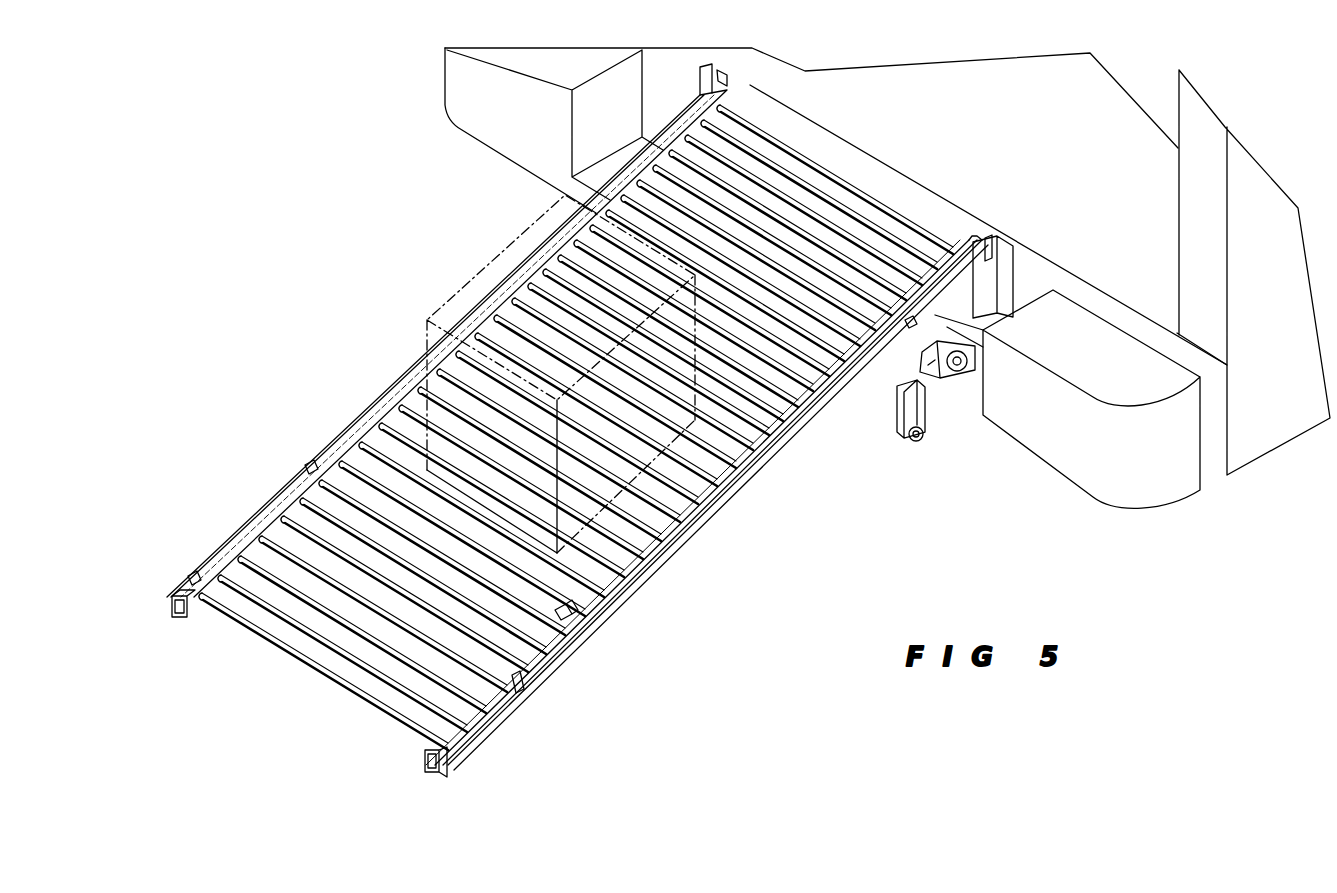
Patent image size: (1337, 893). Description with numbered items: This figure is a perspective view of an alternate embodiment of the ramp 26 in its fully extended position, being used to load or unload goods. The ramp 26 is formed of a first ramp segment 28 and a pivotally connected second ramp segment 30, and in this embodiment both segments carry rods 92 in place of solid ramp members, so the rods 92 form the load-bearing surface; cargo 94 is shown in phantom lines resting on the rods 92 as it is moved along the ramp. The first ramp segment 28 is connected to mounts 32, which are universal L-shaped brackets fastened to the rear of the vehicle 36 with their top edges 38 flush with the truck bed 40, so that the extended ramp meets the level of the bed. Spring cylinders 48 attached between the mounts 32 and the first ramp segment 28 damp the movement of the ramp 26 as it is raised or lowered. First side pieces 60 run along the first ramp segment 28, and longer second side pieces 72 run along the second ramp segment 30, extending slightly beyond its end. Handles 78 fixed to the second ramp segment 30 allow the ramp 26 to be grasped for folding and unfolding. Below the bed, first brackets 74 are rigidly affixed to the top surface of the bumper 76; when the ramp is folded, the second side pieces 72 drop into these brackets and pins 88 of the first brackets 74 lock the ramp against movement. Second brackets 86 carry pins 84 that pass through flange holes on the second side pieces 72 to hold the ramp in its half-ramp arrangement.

The ramp 26 is at (577, 433).
The first ramp segment 28 is at (750, 450).
The second ramp segment 30 is at (617, 593).
The mounts 32 is at (705, 78).
The vehicle 36 is at (1050, 127).
The top edges 38 is at (733, 72).
The truck bed 40 is at (1092, 292).
The spring cylinders 48 is at (910, 328).
The first side pieces 60 is at (540, 257).
The second side pieces 72 is at (402, 388).
The first brackets 74 is at (985, 352).
The bumper 76 is at (950, 343).
The handles 78 is at (308, 462).
The pins 84 is at (918, 448).
The second brackets 86 is at (903, 412).
The pins 88 is at (963, 370).
The rods 92 is at (822, 215).
The cargo 94 is at (480, 272).